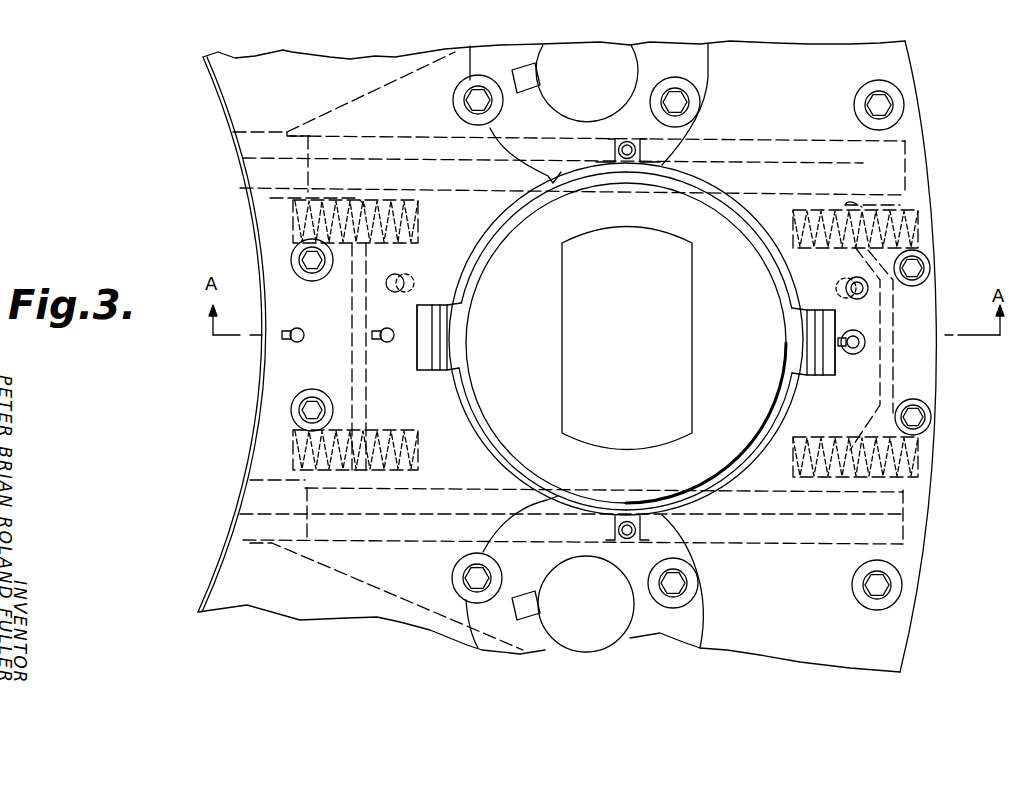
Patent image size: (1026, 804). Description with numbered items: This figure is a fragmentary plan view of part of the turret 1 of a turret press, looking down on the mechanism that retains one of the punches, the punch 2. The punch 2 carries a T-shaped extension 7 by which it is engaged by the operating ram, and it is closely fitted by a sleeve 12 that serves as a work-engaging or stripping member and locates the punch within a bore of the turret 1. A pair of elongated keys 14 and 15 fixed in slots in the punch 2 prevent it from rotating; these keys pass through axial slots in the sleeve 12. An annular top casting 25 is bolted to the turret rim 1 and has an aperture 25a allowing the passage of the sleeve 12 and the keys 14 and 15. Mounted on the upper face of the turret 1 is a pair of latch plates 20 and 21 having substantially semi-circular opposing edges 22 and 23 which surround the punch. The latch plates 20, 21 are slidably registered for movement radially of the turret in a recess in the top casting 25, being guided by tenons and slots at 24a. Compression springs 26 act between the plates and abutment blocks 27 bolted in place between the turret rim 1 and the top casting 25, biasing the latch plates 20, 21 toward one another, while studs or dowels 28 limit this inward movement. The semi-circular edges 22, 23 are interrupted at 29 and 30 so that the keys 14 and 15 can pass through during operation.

The turret 1 is at (240, 534).
The punch 2 is at (720, 448).
The extension of the punch 7 is at (635, 344).
The sleeve 12 is at (462, 344).
The key 14 is at (441, 372).
The key 15 is at (812, 377).
The latch plate 20 is at (375, 378).
The latch plate 21 is at (868, 397).
The semi-circular opposing edge 22 is at (520, 198).
The semi-circular opposing edge 23 is at (782, 283).
The tenons and slots 24a is at (412, 172).
The top casting 25 is at (905, 610).
The aperture 25a is at (482, 240).
The compression springs 26 is at (293, 225).
The abutment blocks 27 is at (275, 200).
The studs or dowels 28 is at (628, 146).
The interruption in latch plate edge 29 is at (417, 362).
The interruption in latch plate edge 30 is at (836, 368).